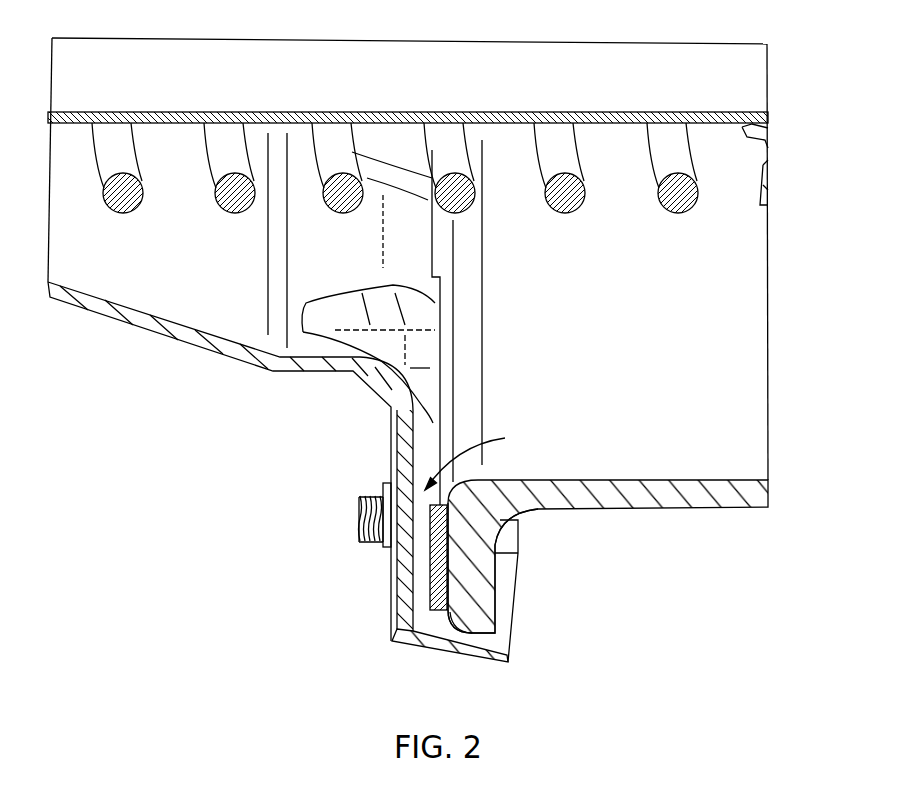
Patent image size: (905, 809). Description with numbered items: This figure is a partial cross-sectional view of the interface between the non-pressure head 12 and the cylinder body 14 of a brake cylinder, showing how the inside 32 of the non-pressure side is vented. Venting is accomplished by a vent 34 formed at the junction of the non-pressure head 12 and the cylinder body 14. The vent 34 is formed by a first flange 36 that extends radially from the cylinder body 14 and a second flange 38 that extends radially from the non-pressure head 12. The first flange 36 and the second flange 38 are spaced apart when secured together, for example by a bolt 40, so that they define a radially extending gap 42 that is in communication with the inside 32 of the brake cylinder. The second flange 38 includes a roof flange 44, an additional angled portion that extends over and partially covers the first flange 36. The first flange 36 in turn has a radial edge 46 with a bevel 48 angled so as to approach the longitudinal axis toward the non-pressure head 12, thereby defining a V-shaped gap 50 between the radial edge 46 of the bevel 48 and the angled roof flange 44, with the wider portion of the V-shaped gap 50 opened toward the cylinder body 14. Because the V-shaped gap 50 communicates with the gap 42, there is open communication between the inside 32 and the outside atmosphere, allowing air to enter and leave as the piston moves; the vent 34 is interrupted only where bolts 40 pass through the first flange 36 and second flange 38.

The non-pressure head 12 is at (178, 334).
The cylinder body 14 is at (700, 498).
The inside 32 is at (750, 298).
The vent 34 is at (342, 670).
The first flange 36 is at (498, 567).
The second flange 38 is at (395, 567).
The bolt 40 is at (360, 517).
The radially extending gap 42 is at (412, 578).
The roof flange 44 is at (447, 642).
The radial edge 46 is at (502, 627).
The bevel 48 is at (488, 622).
The V-shaped gap 50 is at (517, 642).